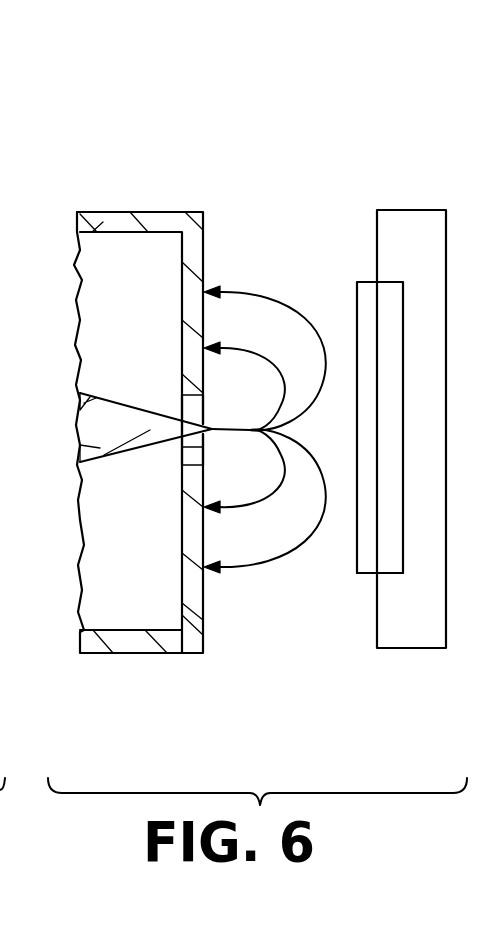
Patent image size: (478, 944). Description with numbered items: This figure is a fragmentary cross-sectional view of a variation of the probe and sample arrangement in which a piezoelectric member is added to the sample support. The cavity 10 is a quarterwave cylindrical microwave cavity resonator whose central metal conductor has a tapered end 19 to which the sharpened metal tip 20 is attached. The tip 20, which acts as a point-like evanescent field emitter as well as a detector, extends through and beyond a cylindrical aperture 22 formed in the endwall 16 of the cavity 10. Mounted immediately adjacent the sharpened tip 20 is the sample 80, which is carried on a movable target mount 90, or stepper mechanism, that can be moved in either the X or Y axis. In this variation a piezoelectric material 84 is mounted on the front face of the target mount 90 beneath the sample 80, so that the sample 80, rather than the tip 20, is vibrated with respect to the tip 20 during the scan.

The cavity 10 is at (106, 208).
The endwall 16 is at (204, 262).
The tapered end 19 is at (122, 396).
The aperture 22 is at (180, 447).
The sharpened metal tip 20 is at (256, 428).
The sample 80 is at (362, 282).
The piezoelectric material 84 is at (393, 553).
The target mount 90 is at (390, 210).